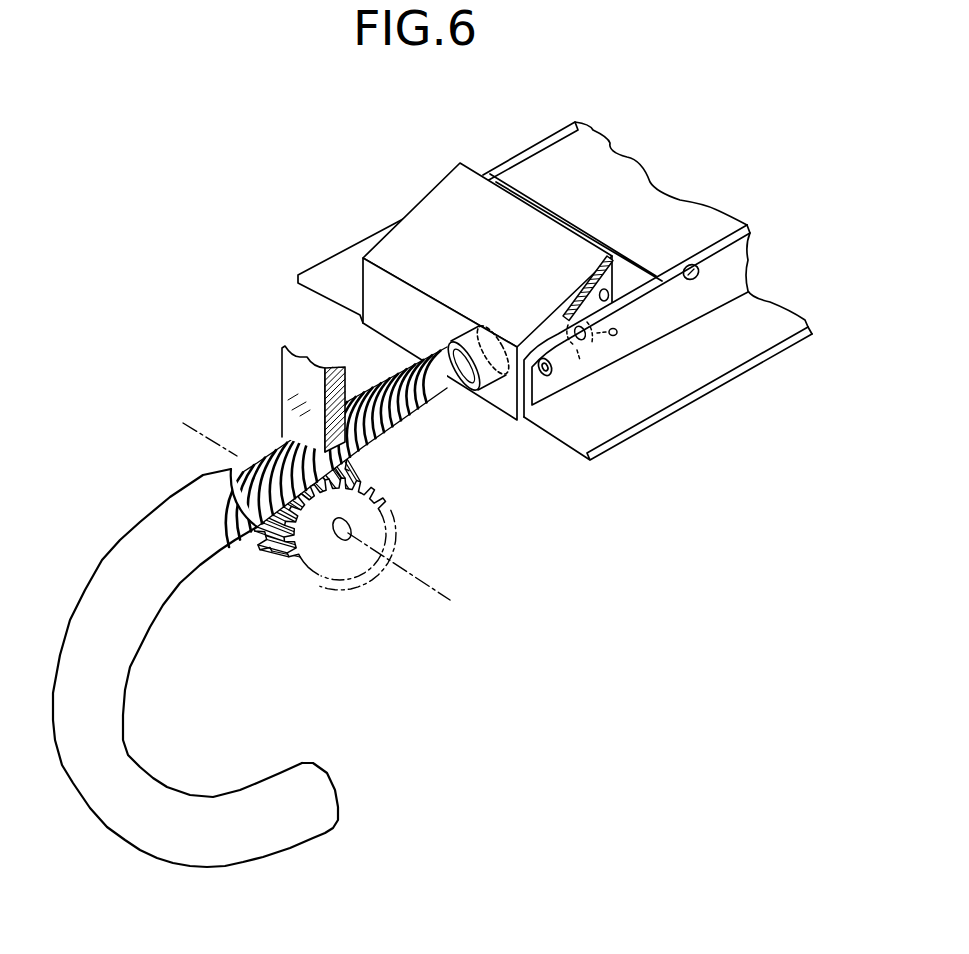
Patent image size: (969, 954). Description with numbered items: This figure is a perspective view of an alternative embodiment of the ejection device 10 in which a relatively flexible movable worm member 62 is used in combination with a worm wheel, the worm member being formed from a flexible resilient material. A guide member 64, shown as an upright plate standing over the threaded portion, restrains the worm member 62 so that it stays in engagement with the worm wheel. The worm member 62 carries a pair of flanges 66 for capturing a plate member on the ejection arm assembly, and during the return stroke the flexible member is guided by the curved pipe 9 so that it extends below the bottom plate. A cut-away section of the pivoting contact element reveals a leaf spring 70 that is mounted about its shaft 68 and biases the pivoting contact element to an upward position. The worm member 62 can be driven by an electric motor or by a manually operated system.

The hook assembly 10 is at (650, 145).
The pipe 9 is at (243, 845).
The flexible movable worm member 62 is at (400, 430).
The guide member 64 is at (282, 370).
The flanges 66 is at (451, 349).
The shaft 68 is at (578, 341).
The leaf spring 70 is at (600, 300).